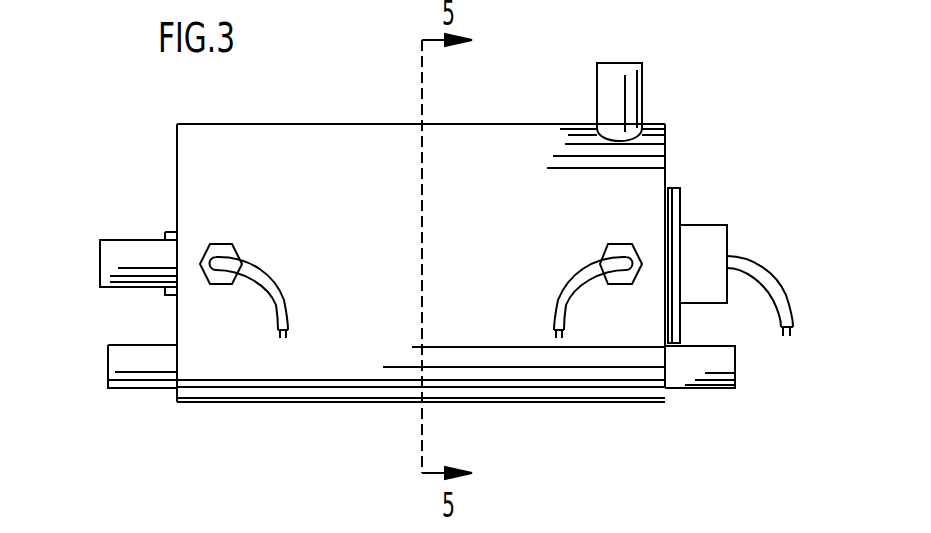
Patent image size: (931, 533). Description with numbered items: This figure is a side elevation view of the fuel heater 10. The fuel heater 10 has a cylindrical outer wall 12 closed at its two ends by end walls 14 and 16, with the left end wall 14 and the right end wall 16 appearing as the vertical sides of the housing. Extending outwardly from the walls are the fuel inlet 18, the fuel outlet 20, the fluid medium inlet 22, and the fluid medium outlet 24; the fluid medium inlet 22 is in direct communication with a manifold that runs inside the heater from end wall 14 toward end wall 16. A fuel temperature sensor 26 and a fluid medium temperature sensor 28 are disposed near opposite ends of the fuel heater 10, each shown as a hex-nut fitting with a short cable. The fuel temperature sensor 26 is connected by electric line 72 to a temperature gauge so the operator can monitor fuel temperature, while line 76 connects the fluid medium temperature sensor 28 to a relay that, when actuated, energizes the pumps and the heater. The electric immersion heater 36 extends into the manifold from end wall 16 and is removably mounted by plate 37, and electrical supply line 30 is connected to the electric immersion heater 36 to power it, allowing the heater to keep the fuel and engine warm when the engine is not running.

The fuel heater 10 is at (353, 98).
The cylindrical outer wall 12 is at (375, 403).
The end wall 14 is at (177, 318).
The end wall 16 is at (666, 140).
The fuel inlet 18 is at (700, 388).
The fuel outlet 20 is at (140, 388).
The fluid medium inlet 22 is at (126, 240).
The fluid medium outlet 24 is at (597, 86).
The fuel temperature sensor 26 is at (222, 243).
The fluid medium temperature sensor 28 is at (620, 245).
The electrical supply line 30 is at (779, 277).
The electric immersion heater 36 is at (707, 225).
The plate 37 is at (683, 323).
The electric line 72 is at (268, 297).
The line 76 is at (582, 287).